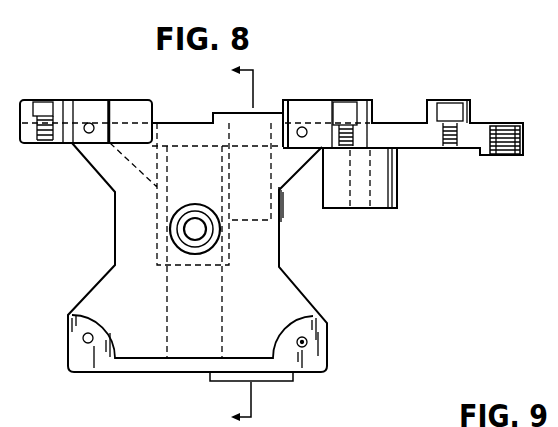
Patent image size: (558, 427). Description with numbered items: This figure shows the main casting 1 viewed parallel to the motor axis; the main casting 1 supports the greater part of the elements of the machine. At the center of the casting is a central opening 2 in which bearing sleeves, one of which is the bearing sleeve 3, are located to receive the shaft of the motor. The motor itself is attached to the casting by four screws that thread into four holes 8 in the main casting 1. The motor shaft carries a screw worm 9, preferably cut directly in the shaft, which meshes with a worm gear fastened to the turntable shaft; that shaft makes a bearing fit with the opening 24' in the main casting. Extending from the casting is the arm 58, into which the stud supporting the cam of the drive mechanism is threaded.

The main casting 1 is at (117, 222).
The central opening 2 is at (187, 229).
The bearing sleeve 3 is at (198, 243).
The holes 8 is at (86, 133).
The screw worm 9 is at (232, 241).
The opening 24' is at (271, 171).
The arm 58 is at (517, 126).